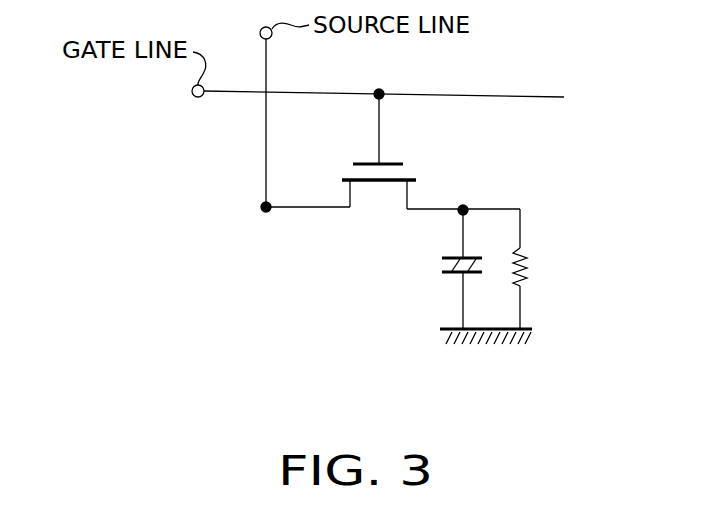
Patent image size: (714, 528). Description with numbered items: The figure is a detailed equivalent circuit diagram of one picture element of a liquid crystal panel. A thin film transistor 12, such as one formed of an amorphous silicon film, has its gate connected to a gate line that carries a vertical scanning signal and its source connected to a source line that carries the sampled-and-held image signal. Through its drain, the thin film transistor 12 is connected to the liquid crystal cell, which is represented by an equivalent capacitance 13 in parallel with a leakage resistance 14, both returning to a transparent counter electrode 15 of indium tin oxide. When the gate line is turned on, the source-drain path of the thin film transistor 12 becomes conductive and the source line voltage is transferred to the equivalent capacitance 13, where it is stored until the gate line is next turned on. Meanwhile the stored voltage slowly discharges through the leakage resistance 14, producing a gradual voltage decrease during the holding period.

The thin film transistor 12 is at (417, 174).
The equivalent capacitance 13 is at (445, 275).
The leakage resistance 14 is at (527, 263).
The transparent counter electrode 15 is at (500, 344).